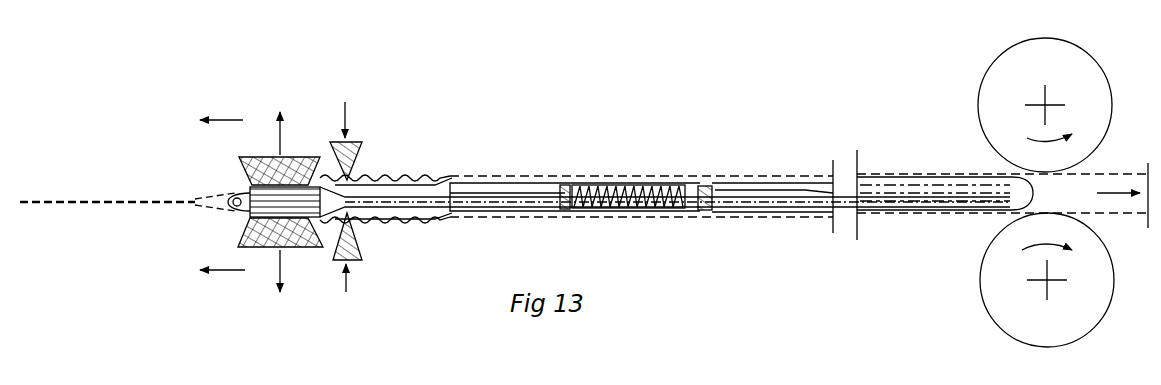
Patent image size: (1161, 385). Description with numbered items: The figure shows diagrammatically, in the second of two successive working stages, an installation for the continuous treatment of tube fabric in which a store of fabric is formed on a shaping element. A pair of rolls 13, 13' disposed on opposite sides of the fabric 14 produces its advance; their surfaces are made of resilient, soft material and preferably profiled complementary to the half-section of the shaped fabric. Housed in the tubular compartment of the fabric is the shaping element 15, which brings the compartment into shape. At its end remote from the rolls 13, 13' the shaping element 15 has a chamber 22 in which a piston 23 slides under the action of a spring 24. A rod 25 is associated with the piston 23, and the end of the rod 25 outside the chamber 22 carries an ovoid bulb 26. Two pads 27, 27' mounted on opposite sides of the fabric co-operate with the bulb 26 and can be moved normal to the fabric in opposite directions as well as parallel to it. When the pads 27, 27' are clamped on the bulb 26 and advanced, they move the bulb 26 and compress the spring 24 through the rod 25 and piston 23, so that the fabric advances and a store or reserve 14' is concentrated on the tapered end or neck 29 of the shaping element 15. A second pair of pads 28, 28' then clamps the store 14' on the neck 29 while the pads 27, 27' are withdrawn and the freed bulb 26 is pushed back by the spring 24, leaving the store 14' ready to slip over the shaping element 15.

The roll 13 is at (1021, 280).
The roll 13' is at (1022, 105).
The fabric 14 is at (800, 179).
The store or reserve 14' is at (391, 169).
The shaping element 15 is at (785, 200).
The chamber 22 is at (518, 211).
The piston 23 is at (554, 210).
The spring 24 is at (623, 206).
The rod 25 is at (462, 212).
The ovoid bulb 26 is at (235, 205).
The pad 27 is at (261, 271).
The pad 27' is at (260, 128).
The pad 28 is at (370, 261).
The pad 28' is at (368, 132).
The tapered end or neck 29 is at (378, 196).